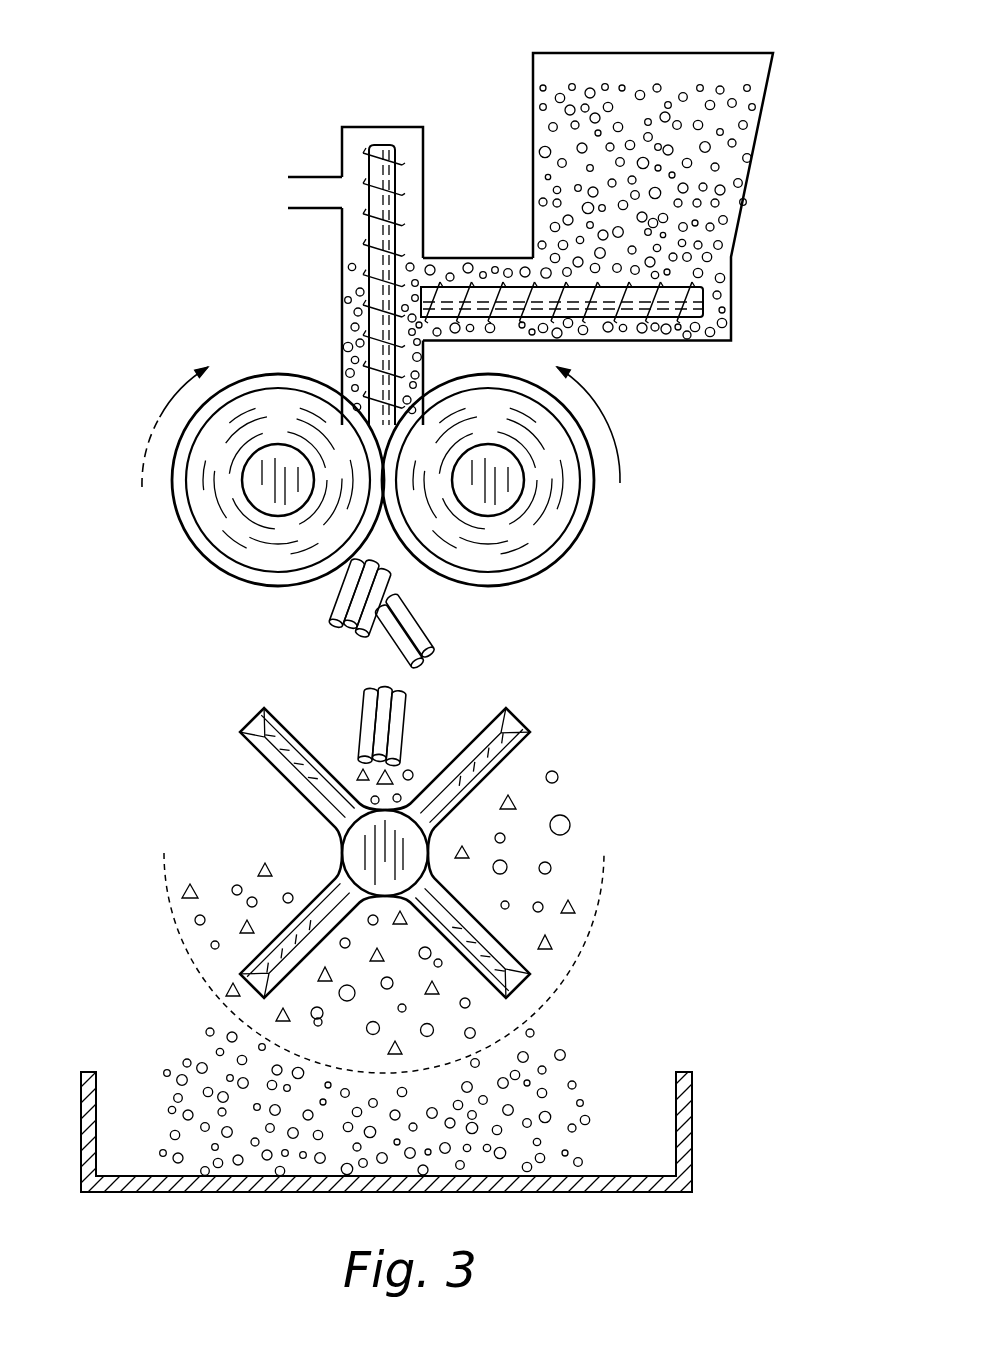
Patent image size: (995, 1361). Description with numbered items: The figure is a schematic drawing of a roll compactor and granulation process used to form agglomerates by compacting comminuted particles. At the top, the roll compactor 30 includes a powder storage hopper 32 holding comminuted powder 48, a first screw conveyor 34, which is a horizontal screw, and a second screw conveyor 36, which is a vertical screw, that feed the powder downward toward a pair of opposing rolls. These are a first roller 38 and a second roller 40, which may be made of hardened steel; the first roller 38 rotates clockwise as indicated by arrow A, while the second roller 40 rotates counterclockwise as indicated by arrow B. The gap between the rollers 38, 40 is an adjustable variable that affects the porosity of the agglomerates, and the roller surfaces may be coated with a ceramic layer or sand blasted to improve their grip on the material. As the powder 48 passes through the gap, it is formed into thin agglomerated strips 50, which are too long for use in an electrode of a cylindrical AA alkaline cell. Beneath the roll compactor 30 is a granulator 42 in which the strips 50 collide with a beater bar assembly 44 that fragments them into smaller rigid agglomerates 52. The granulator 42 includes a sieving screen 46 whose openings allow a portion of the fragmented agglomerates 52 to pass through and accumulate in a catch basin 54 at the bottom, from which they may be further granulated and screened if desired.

The roll compactor 30 is at (252, 328).
The powder storage hopper 32 is at (761, 124).
The first screw conveyor 34 is at (667, 308).
The second screw conveyor 36 is at (377, 167).
The first roller 38 is at (198, 548).
The second roller 40 is at (571, 565).
The granulator 42 is at (362, 846).
The beater bar assembly 44 is at (533, 750).
The screen 46 is at (557, 988).
The comminuted powder 48 is at (583, 170).
The agglomerated strips 50 is at (417, 630).
The rigid agglomerates 52 is at (551, 868).
The catch basin 54 is at (687, 1132).
The arrow A is at (157, 423).
The arrow B is at (612, 413).